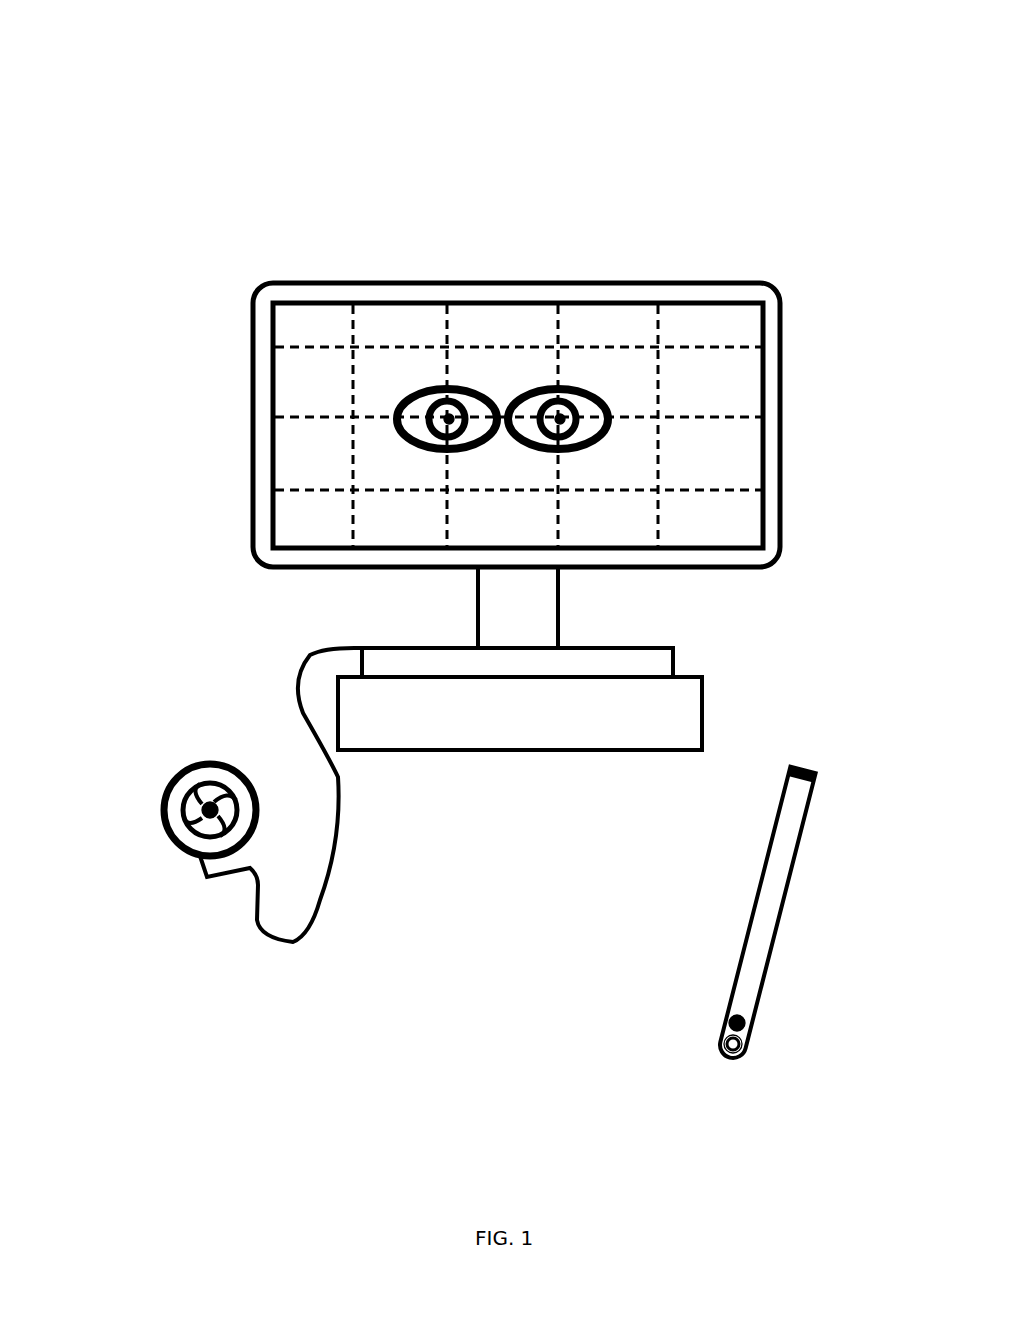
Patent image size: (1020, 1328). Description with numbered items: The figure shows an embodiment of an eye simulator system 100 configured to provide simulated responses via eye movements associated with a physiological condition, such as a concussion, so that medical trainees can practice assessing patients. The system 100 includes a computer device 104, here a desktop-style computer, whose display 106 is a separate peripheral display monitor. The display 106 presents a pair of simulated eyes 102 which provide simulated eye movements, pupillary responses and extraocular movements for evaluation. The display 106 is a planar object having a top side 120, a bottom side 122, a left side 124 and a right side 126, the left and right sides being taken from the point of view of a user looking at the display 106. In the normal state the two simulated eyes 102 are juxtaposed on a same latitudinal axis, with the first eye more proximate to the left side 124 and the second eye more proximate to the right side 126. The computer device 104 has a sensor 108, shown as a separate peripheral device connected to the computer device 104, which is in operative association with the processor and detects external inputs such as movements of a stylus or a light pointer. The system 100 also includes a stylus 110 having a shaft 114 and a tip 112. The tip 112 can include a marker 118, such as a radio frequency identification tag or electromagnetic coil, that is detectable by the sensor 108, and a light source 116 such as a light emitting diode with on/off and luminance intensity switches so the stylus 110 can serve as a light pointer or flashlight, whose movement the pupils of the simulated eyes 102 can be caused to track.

The system 100 is at (198, 88).
The simulated eye 102 is at (414, 392).
The computer device 104 is at (357, 698).
The display 106 is at (254, 339).
The sensor 108 is at (233, 778).
The stylus 110 is at (817, 745).
The tip 112 is at (713, 1021).
The shaft 114 is at (771, 856).
The light source 116 is at (721, 1047).
The marker 118 is at (748, 1017).
The top side 120 is at (612, 281).
The bottom side 122 is at (588, 570).
The left side 124 is at (250, 397).
The right side 126 is at (780, 383).